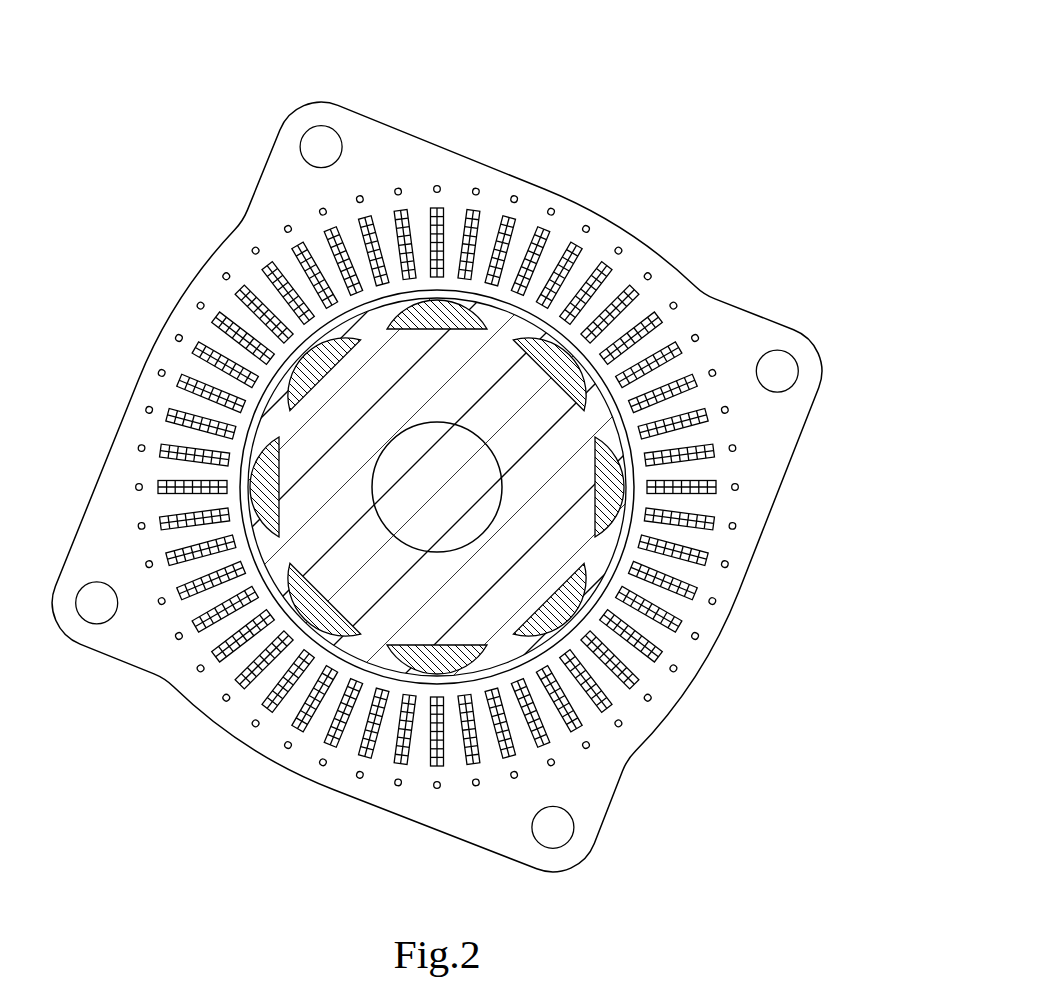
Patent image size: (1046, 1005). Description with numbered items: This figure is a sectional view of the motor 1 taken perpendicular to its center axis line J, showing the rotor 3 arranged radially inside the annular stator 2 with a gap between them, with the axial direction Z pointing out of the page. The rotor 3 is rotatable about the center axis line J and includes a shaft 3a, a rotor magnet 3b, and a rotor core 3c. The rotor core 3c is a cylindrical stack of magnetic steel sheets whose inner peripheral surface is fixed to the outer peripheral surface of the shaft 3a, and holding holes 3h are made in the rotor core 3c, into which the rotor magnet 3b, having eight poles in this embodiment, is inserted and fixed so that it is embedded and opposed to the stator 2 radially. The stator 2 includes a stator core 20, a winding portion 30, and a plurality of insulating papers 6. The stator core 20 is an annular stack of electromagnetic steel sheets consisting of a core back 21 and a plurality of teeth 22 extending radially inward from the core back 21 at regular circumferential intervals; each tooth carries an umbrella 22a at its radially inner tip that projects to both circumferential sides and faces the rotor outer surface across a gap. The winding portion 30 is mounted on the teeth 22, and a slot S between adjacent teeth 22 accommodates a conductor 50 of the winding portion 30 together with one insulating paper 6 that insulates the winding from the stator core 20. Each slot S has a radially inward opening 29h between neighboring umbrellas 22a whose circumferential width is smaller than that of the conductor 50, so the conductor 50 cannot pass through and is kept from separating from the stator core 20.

The motor 1 is at (670, 108).
The stator 2 is at (571, 189).
The stator core 20 is at (599, 201).
The core back 21 is at (608, 238).
The teeth 22 is at (578, 279).
The umbrella 22a is at (603, 356).
The opening 29h is at (640, 504).
The winding portion 30 is at (536, 225).
The slot S is at (713, 411).
The insulating paper 6 is at (683, 599).
The conductor 50 is at (585, 646).
The rotor 3 is at (344, 628).
The shaft 3a is at (432, 552).
The rotor magnet 3b is at (279, 608).
The rotor core 3c is at (278, 578).
The holding hole 3h is at (305, 620).
The center axis line J is at (437, 486).
The axial direction Z is at (823, 872).